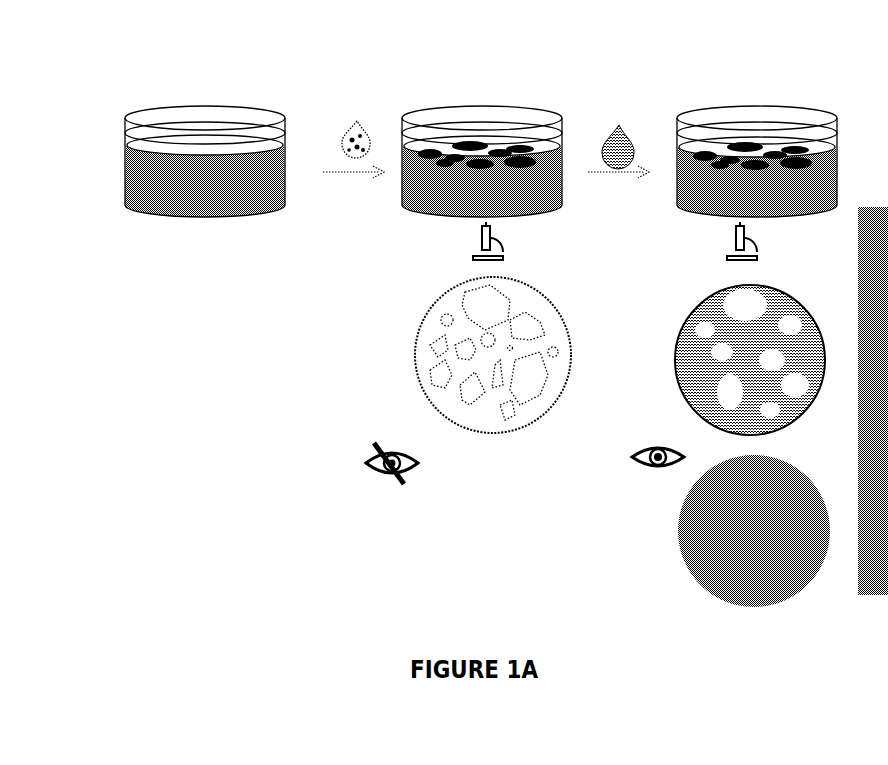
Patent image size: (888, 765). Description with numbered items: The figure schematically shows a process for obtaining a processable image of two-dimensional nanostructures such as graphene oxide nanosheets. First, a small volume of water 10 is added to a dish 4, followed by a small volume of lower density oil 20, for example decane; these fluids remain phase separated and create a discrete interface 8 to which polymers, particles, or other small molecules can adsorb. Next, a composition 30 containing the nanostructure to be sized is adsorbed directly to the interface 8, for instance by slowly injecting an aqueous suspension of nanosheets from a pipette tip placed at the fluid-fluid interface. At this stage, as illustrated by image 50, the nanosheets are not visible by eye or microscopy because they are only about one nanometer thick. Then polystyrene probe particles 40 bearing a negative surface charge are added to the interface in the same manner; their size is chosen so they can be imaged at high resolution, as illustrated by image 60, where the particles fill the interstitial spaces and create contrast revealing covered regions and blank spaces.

The dish 4 is at (284, 132).
The interface 8 is at (525, 175).
The water 10 is at (268, 160).
The lower density oil 20 is at (262, 205).
The composition containing a two-dimensional nanostructure 30 is at (466, 146).
The polystyrene probe particles 40 is at (618, 149).
The image 50 is at (398, 393).
The image 60 is at (670, 413).